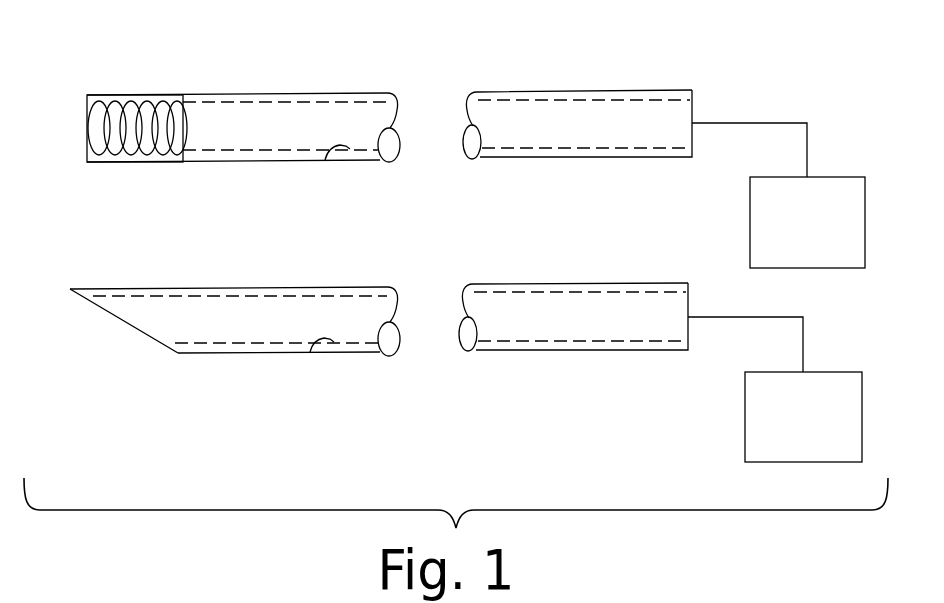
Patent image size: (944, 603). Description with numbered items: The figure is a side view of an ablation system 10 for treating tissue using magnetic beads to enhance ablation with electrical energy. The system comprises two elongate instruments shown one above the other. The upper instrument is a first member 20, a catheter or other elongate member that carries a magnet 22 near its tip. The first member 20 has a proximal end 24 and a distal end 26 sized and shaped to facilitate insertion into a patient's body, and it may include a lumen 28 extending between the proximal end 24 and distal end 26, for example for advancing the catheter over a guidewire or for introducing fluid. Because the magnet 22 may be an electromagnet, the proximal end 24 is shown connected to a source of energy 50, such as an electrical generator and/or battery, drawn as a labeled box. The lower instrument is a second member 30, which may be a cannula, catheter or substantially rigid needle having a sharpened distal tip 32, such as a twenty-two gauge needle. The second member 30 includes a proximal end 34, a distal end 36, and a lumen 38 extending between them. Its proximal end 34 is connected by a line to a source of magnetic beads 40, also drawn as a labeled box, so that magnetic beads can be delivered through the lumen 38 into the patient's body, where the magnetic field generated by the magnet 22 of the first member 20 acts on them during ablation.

The ablation system 10 is at (499, 73).
The first member 20 is at (352, 92).
The magnet 22 is at (140, 155).
The proximal end 24 is at (590, 158).
The distal end 26 is at (240, 163).
The lumen 28 is at (324, 162).
The second member 30 is at (343, 287).
The sharpened distal tip 32 is at (87, 298).
The proximal end 34 is at (590, 351).
The distal end 36 is at (197, 354).
The lumen 38 is at (309, 353).
The source of magnetic beads 40 is at (745, 418).
The source of energy 50 is at (750, 227).